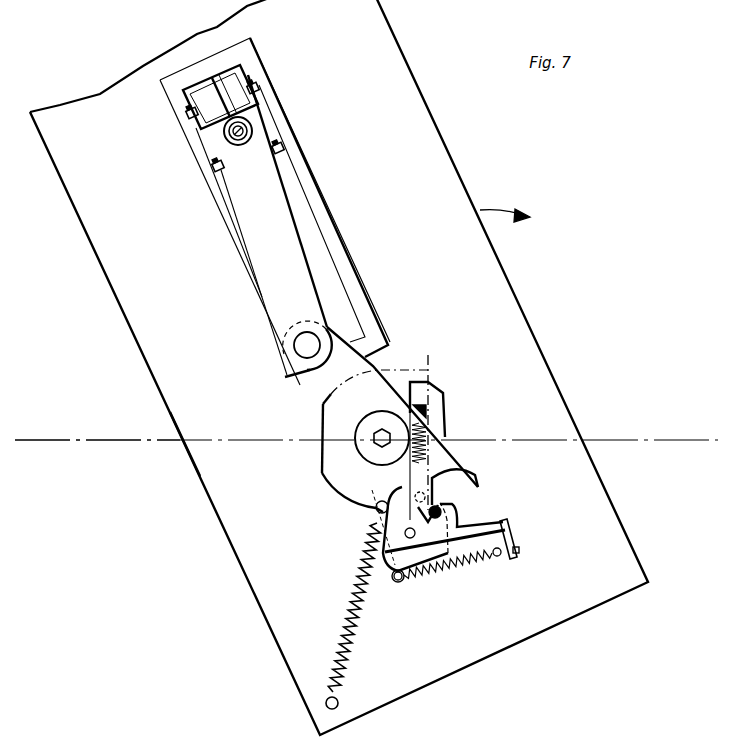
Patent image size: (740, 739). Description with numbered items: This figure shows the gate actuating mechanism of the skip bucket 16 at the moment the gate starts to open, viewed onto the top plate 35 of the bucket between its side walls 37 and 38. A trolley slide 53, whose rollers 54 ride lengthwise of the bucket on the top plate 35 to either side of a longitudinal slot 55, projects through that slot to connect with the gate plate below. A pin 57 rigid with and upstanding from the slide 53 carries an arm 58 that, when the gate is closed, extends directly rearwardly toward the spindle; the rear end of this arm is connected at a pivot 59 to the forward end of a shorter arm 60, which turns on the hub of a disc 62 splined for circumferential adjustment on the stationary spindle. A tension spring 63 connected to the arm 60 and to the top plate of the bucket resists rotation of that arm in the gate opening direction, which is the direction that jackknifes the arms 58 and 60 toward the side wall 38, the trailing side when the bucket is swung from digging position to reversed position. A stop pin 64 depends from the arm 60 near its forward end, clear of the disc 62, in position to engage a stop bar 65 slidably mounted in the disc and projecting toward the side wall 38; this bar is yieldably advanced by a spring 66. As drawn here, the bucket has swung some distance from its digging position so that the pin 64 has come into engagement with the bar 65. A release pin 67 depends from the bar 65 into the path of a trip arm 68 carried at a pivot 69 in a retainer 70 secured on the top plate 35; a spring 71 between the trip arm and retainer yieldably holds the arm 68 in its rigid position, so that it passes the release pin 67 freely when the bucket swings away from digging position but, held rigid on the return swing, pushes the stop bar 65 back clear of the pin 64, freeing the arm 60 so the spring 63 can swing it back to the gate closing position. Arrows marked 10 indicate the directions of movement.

The direction of movement 10 is at (428, 372).
The skip bucket 16 is at (190, 474).
The top plate 35 is at (530, 410).
The side wall 37 is at (522, 316).
The side wall 38 is at (152, 382).
The trolley slide 53 is at (227, 102).
The rollers 54 is at (200, 116).
The longitudinal slot 55 is at (318, 283).
The pin 57 is at (250, 128).
The arm 58 is at (267, 255).
The pivot 59 is at (300, 347).
The arm 60 is at (335, 418).
The disc 62 is at (330, 475).
The tension spring 63 is at (352, 600).
The stop pin 64 is at (442, 507).
The stop bar 65 is at (414, 482).
The spring 66 is at (428, 430).
The release pin 67 is at (432, 480).
The trip arm 68 is at (413, 580).
The pivot 69 is at (405, 535).
The retainer 70 is at (500, 528).
The spring 71 is at (475, 562).